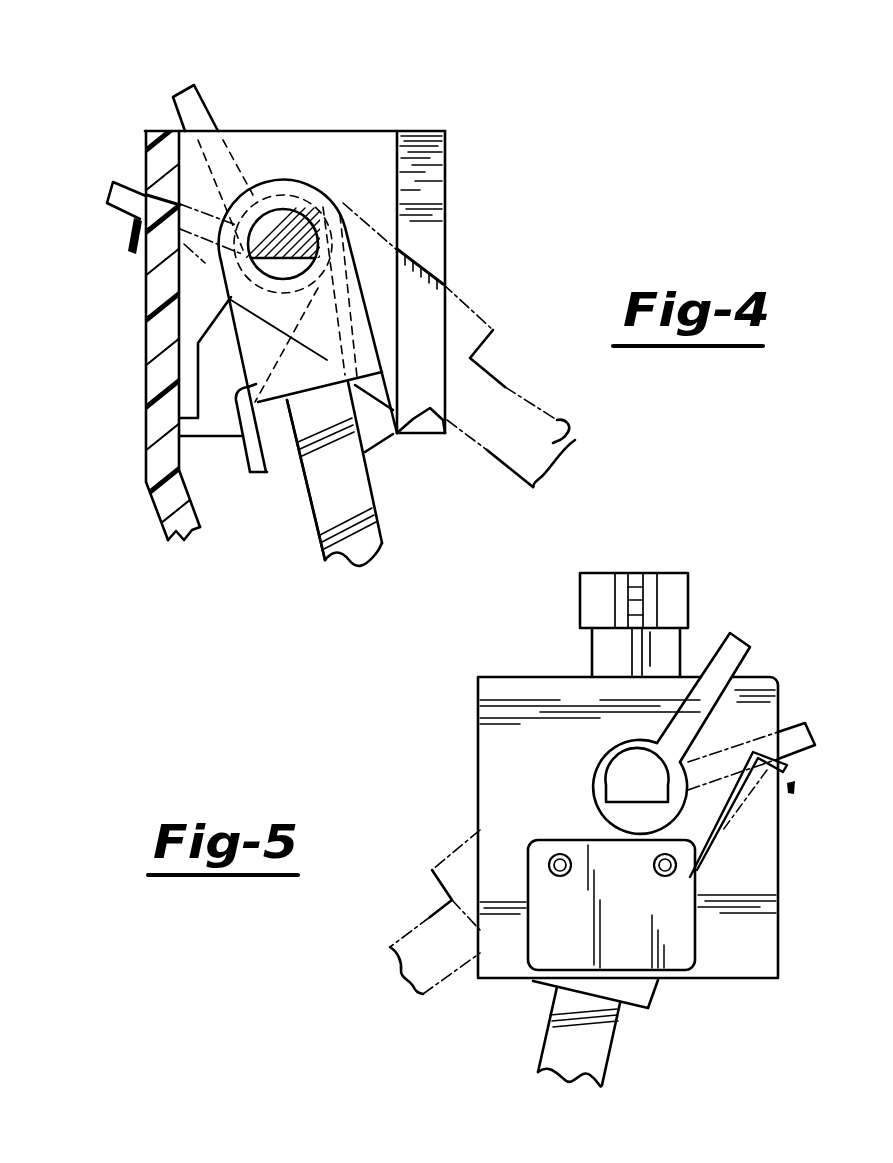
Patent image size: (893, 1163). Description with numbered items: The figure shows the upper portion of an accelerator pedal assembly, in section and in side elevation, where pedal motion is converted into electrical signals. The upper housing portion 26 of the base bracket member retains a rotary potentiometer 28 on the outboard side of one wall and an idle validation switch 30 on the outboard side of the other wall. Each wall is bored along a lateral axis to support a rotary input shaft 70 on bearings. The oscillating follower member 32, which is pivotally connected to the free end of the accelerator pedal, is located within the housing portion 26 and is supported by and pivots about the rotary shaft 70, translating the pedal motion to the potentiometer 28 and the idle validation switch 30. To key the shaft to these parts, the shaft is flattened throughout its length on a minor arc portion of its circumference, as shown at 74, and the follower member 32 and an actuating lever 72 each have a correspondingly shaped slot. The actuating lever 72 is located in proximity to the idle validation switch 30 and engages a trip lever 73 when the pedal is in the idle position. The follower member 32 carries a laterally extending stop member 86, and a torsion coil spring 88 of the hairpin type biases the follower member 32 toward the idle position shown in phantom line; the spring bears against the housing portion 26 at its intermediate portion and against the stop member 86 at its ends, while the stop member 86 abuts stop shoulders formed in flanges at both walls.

In FIG. 5, the upper housing portion 26 is at (478, 709).
In FIG. 5, the potentiometer 28 is at (667, 574).
In FIG. 5, the idle validation switch 30 is at (698, 948).
In FIG. 4, the oscillating follower member 32 is at (553, 419).
In FIG. 5, the oscillating follower member 32 is at (587, 1088).
In FIG. 4, the rotary input shaft 70 is at (298, 242).
In FIG. 4, the actuating lever 72 is at (202, 97).
In FIG. 5, the actuating lever 72 is at (750, 655).
In FIG. 4, the trip lever 73 is at (131, 236).
In FIG. 5, the trip lever 73 is at (792, 767).
In FIG. 4, the flattened portion 74 is at (287, 267).
In FIG. 5, the flattened portion 74 is at (628, 803).
In FIG. 4, the stop member 86 is at (297, 472).
In FIG. 4, the torsion coil spring 88 is at (245, 471).